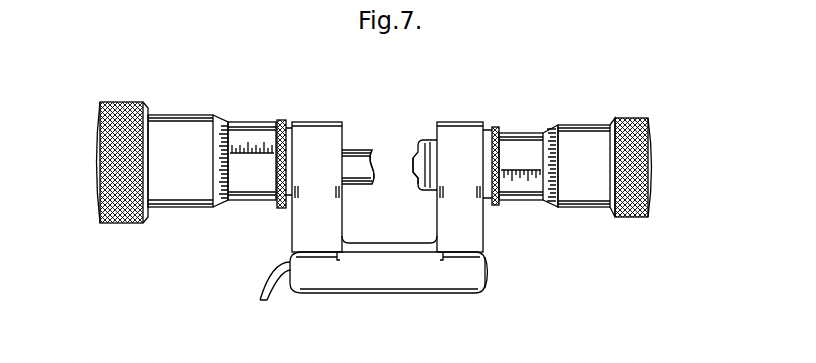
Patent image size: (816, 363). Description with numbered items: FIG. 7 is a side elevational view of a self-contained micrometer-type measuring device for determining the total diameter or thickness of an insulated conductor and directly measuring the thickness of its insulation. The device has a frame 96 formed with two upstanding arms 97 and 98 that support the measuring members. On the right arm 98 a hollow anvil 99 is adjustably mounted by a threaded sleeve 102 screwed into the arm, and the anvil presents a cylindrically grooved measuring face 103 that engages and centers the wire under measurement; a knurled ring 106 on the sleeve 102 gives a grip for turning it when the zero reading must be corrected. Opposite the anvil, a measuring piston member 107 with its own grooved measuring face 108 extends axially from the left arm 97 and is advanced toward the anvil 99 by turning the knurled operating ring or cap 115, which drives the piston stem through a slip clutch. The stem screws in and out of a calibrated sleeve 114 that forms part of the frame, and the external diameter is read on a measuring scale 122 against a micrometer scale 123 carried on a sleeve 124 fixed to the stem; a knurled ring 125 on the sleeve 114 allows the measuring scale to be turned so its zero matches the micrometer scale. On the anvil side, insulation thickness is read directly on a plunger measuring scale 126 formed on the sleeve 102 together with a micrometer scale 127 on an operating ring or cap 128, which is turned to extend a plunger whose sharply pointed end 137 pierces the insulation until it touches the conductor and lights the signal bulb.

The frame 96 is at (420, 291).
The frame arm 97 is at (336, 224).
The frame arm 98 is at (446, 227).
The hollow anvil 99 is at (436, 143).
The threaded sleeve 102 is at (508, 131).
The grooved measuring face 103 is at (414, 177).
The knurled ring 106 is at (497, 206).
The measuring piston member 107 is at (363, 156).
The measuring face 108 is at (378, 166).
The calibrated sleeve 114 is at (257, 128).
The knurled operating ring or cap 115 is at (100, 160).
The measuring scale 122 is at (255, 168).
The micrometer scale 123 is at (220, 206).
The sleeve 124 is at (190, 128).
The knurled ring 125 is at (283, 121).
The plunger measuring scale 126 is at (523, 172).
The micrometer scale 127 is at (552, 205).
The operating ring or cap 128 is at (653, 168).
The sharply pointed end 137 is at (412, 164).